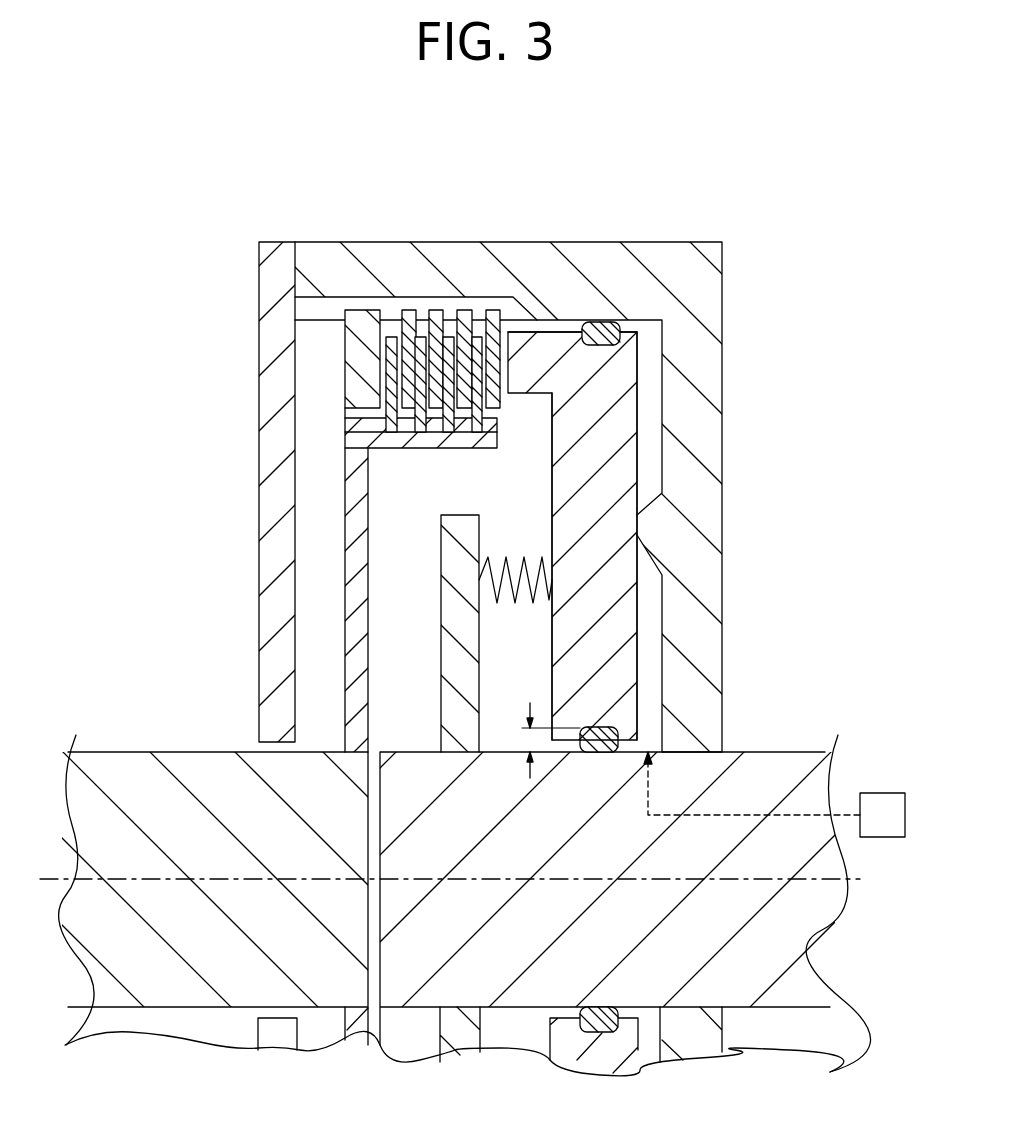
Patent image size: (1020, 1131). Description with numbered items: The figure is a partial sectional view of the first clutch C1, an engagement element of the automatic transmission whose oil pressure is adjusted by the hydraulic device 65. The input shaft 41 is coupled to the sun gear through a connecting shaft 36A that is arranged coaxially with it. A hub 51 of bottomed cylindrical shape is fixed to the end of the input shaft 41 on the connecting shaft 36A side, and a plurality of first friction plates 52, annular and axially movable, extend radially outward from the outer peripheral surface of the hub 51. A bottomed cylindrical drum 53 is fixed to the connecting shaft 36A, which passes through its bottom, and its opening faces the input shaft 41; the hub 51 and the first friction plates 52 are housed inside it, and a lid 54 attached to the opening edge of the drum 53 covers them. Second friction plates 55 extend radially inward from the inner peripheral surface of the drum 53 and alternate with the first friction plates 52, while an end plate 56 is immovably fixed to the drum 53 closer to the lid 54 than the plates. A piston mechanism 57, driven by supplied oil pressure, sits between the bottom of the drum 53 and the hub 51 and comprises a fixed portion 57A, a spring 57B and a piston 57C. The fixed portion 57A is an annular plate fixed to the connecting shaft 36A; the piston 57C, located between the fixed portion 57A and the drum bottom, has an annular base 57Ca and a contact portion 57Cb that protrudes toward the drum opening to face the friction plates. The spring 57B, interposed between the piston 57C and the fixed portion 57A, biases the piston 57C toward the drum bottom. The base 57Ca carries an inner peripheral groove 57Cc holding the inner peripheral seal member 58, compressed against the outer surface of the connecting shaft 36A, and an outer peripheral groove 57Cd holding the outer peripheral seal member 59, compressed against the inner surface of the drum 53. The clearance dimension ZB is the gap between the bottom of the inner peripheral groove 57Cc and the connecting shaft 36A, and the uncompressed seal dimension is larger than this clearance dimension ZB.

The first clutch C1 is at (167, 307).
The connecting shaft 36A is at (775, 752).
The input shaft 41 is at (124, 752).
The hub 51 is at (368, 578).
The first friction plates 52 is at (443, 448).
The drum 53 is at (722, 520).
The lid 54 is at (259, 438).
The second friction plates 55 is at (468, 310).
The end plate 56 is at (345, 365).
The piston mechanism 57 is at (564, 475).
The fixed portion 57A is at (441, 667).
The spring 57B is at (507, 604).
The piston 57C is at (581, 465).
The base 57Ca is at (552, 440).
The contact portion 57Cb is at (545, 332).
The inner peripheral groove 57Cc is at (605, 637).
The outer peripheral groove 57Cd is at (602, 423).
The inner peripheral seal member 58 is at (588, 754).
The outer peripheral seal member 59 is at (622, 325).
The hydraulic device 65 is at (885, 793).
The clearance dimension ZB is at (527, 752).